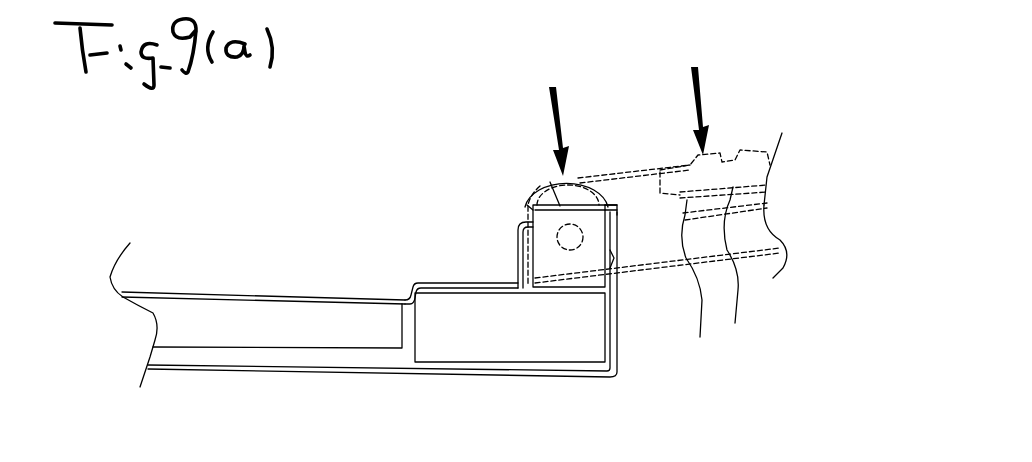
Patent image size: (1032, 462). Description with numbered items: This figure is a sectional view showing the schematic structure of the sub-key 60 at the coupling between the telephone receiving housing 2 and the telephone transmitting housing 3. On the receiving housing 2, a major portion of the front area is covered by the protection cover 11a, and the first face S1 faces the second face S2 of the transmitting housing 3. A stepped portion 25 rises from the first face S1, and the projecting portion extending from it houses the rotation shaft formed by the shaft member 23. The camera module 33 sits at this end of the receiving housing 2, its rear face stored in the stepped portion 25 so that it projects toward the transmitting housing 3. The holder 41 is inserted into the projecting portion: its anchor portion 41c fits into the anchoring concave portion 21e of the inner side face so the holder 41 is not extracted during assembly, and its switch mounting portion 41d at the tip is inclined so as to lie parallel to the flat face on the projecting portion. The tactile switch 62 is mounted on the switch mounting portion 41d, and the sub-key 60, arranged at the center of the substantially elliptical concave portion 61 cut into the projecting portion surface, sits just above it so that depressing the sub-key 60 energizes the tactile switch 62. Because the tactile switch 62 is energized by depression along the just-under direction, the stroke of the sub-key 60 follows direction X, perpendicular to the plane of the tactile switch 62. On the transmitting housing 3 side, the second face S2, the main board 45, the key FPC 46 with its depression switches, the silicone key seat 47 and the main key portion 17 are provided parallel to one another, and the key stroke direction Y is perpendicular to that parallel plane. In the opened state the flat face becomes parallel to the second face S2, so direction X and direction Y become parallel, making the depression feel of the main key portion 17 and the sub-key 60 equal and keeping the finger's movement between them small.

The telephone receiving housing 2 is at (548, 375).
The telephone transmitting housing 3 is at (749, 270).
The protection cover 11a is at (267, 317).
The main key portion 17 is at (747, 153).
The anchoring concave portion 21e is at (630, 270).
The shaft member 23 is at (528, 228).
The stepped portion 25 is at (418, 283).
The camera module 33 is at (428, 327).
The holder 41 is at (610, 313).
The anchor portion 41c is at (619, 272).
The switch mounting portion 41d is at (608, 185).
The main board 45 is at (736, 270).
The key FPC 46 is at (689, 280).
The key seat 47 is at (767, 177).
The sub-key 60 is at (582, 198).
The concave portion 61 is at (522, 205).
The tactile switch 62 is at (527, 200).
The first face S1 is at (313, 293).
The second face S2 is at (658, 157).
The direction X is at (563, 112).
The direction Y is at (710, 93).